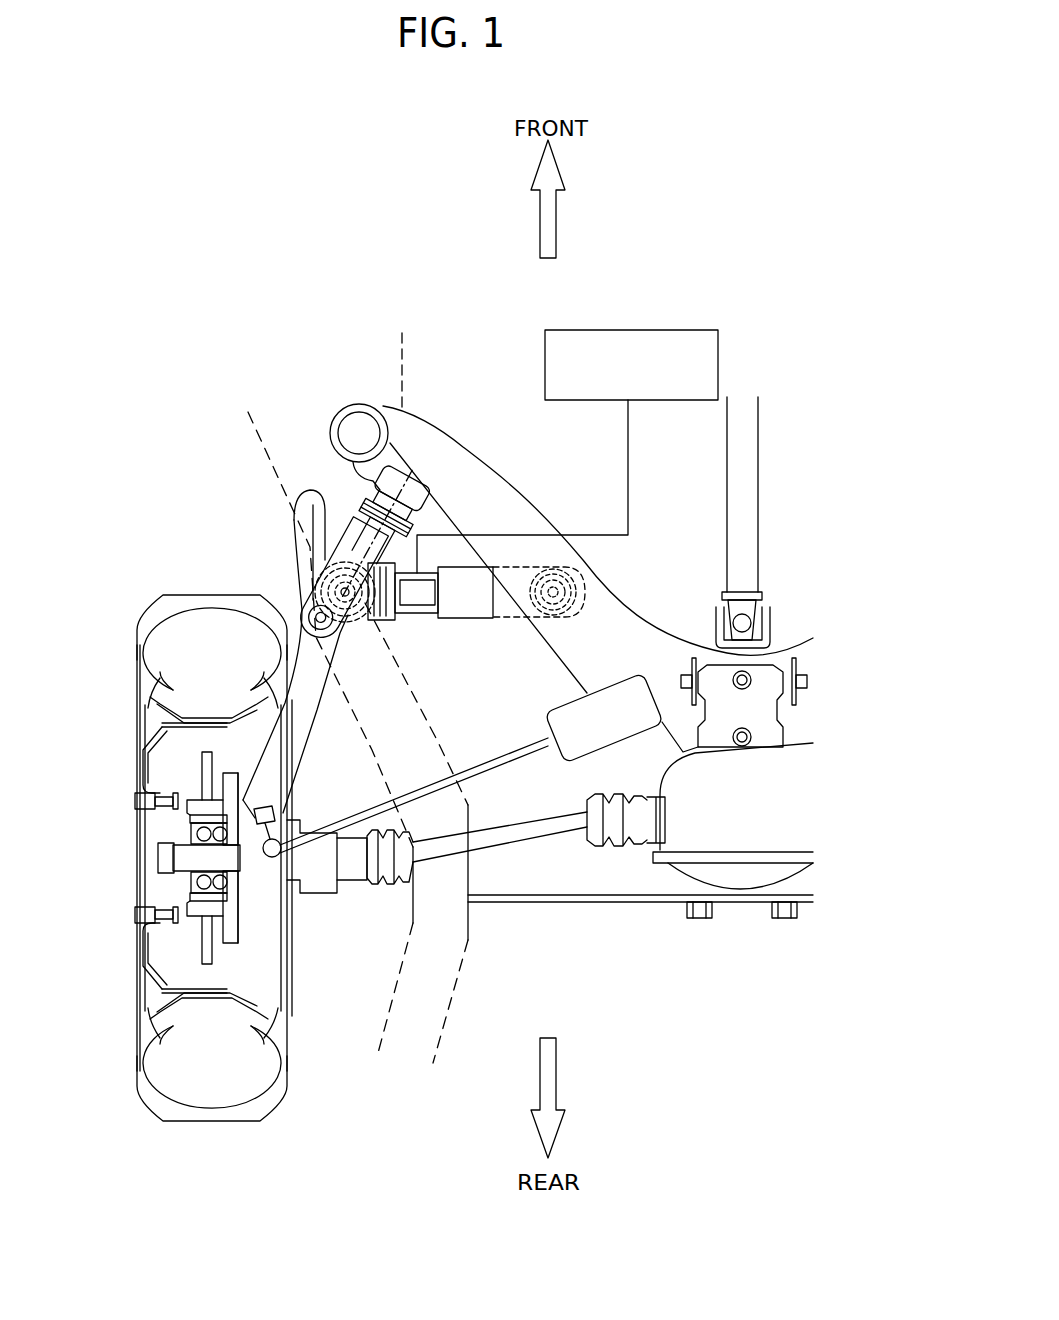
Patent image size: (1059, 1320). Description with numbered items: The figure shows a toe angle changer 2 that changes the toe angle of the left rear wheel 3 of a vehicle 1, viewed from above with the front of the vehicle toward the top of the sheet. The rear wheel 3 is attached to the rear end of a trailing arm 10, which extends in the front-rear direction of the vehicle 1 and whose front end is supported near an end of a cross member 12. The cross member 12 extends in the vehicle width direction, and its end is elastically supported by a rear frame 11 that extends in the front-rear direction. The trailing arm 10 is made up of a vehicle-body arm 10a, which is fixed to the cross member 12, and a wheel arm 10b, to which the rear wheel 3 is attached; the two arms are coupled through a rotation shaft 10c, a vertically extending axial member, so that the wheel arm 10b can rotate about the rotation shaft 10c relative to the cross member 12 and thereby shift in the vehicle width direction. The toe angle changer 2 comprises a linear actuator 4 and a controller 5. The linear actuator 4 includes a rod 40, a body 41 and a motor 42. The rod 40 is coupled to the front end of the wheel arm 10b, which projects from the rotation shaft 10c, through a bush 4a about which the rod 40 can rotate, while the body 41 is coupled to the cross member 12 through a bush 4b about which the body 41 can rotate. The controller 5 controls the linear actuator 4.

The vehicle 1 is at (546, 77).
The toe angle changer 2 is at (307, 310).
The rear wheel 3 is at (187, 592).
The linear actuator 4 is at (505, 570).
The bush 4a is at (322, 520).
The bush 4b is at (580, 577).
The controller 5 is at (682, 330).
The trailing arm 10 is at (296, 620).
The vehicle-body arm 10a is at (372, 505).
The wheel arm 10b is at (290, 740).
The rotation shaft 10c is at (313, 557).
The rear frame 11 is at (404, 344).
The cross member 12 is at (625, 616).
The rod 40 is at (327, 643).
The body 41 is at (470, 618).
The motor 42 is at (418, 613).